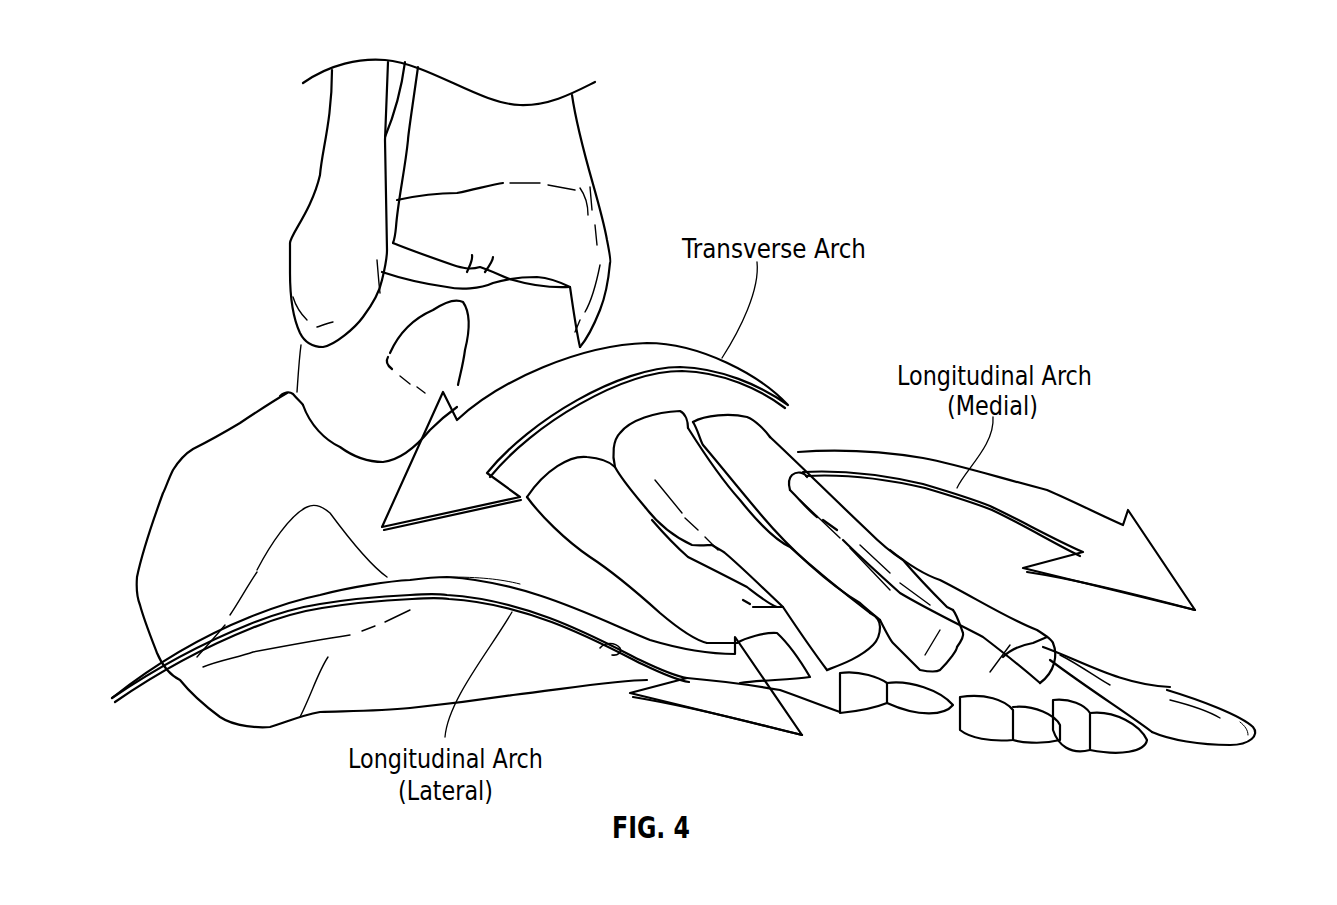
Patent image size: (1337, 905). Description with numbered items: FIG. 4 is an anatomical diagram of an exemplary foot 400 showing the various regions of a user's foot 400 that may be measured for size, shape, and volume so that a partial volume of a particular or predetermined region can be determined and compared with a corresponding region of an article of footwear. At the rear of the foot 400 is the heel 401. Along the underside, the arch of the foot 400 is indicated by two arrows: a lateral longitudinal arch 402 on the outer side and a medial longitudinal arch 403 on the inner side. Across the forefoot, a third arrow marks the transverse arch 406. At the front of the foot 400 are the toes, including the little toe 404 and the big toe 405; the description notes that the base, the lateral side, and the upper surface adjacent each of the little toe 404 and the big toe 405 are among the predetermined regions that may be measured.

The foot 400 is at (182, 552).
The heel 401 is at (210, 692).
The lateral longitudinal arch 402 is at (457, 605).
The medial longitudinal arch 403 is at (1152, 557).
The little toe 404 is at (610, 652).
The big toe 405 is at (1253, 730).
The transverse arch 406 is at (535, 383).